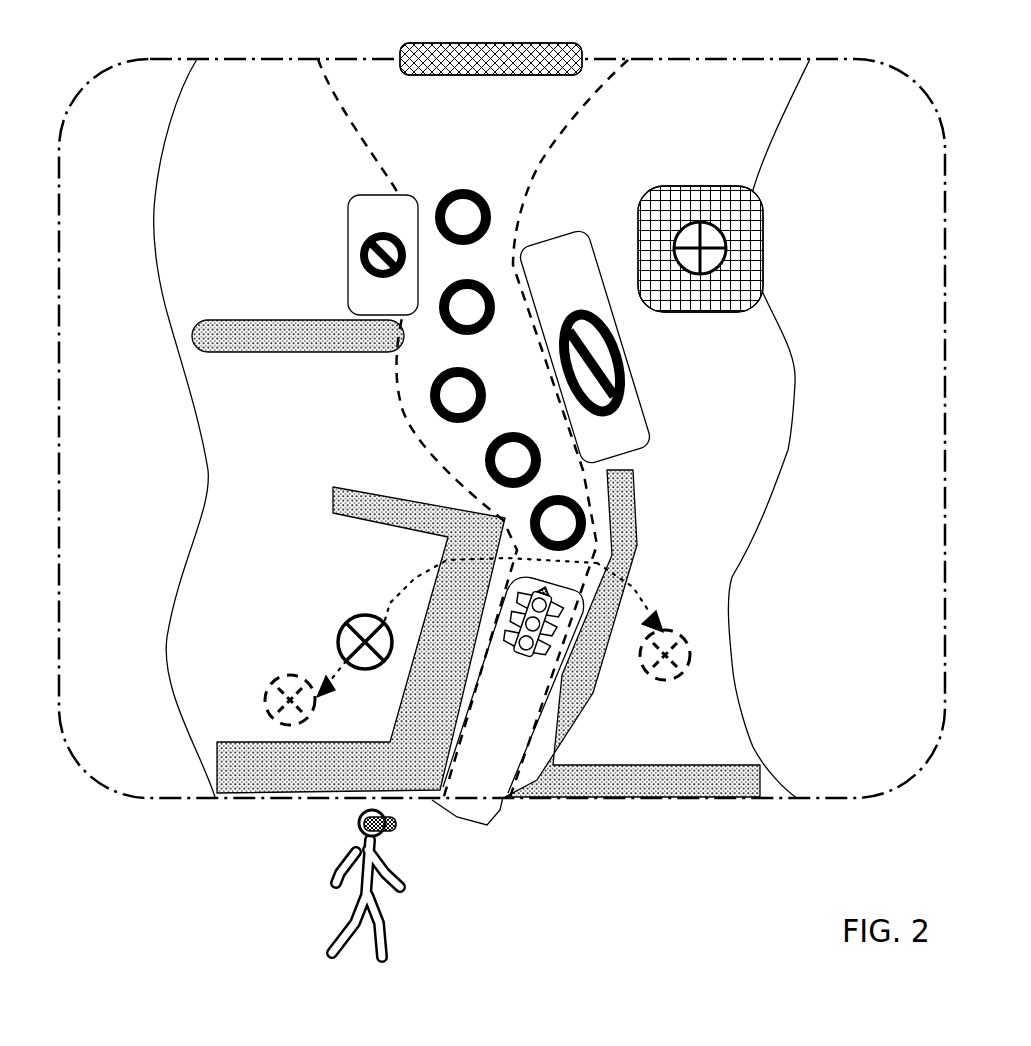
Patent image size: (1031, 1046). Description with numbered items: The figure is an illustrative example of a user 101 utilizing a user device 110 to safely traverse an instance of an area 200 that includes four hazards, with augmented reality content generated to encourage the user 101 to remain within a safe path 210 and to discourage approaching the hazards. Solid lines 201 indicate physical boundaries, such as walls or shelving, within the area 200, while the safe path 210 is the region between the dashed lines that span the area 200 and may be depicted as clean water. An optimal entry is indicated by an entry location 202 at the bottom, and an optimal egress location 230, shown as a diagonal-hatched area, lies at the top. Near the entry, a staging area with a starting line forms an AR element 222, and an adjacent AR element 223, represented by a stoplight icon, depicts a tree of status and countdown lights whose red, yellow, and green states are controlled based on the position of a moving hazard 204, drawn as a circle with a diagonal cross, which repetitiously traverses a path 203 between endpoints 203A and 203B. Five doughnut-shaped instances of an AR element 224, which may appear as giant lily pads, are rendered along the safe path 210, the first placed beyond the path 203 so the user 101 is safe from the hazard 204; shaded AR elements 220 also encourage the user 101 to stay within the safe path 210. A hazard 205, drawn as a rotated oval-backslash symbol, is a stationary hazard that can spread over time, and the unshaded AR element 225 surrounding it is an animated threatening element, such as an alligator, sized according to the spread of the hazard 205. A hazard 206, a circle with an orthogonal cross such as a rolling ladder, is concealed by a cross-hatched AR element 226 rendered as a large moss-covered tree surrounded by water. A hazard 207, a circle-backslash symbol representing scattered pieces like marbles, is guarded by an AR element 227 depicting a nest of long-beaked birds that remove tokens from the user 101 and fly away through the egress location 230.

The area 200 is at (946, 380).
The solid lines 201 is at (205, 445).
The entry location 202 is at (457, 817).
The path 203 is at (410, 578).
The endpoint 203A is at (682, 678).
The endpoint 203B is at (290, 676).
The hazard 204 is at (350, 620).
The hazard 205 is at (618, 340).
The hazard 206 is at (726, 248).
The hazard 207 is at (364, 255).
The safe path 210 is at (330, 107).
The AR element 220 is at (240, 319).
The AR element 222 is at (503, 810).
The AR element 223 is at (527, 653).
The AR element 224 is at (431, 397).
The AR element 225 is at (655, 414).
The AR element 226 is at (765, 210).
The AR element 227 is at (349, 206).
The egress location 230 is at (462, 76).
The user device 110 is at (362, 826).
The user 101 is at (392, 915).